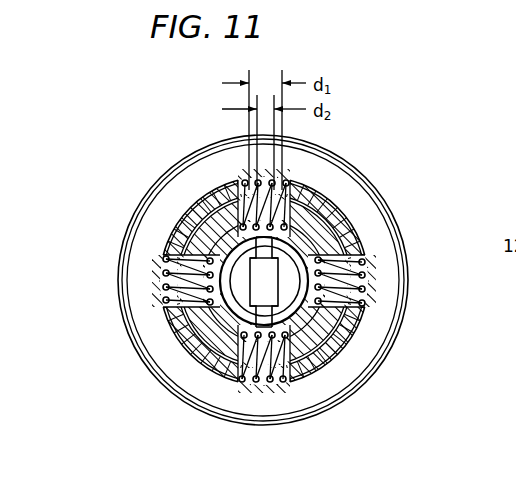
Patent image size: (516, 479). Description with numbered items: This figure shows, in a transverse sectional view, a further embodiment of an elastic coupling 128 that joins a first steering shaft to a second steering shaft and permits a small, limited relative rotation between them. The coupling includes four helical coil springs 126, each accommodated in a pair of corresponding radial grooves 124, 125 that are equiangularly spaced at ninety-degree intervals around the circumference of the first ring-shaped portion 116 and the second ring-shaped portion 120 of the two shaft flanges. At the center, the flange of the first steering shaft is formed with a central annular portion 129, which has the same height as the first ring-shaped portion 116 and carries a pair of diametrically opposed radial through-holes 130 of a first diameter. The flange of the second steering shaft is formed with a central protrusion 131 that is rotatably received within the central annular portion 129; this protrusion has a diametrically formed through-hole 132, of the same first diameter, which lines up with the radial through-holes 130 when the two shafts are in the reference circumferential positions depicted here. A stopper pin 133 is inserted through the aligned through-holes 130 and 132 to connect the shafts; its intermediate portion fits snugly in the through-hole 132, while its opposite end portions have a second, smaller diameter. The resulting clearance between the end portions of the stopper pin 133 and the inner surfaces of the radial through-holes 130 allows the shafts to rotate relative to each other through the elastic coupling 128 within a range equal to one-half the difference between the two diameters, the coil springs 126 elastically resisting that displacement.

The elastic coupling 128 is at (156, 162).
The second ring-shaped portion 120 is at (212, 186).
The central protrusion 131 is at (215, 260).
The first ring-shaped portion 116 is at (358, 245).
The radial groove 124 is at (361, 264).
The radial groove 125 is at (264, 281).
The helical coil spring 126 is at (360, 288).
The central annular portion 129 is at (247, 314).
The radial through-hole 130 is at (252, 327).
The through-hole 132 is at (292, 303).
The stopper pin 133 is at (337, 360).